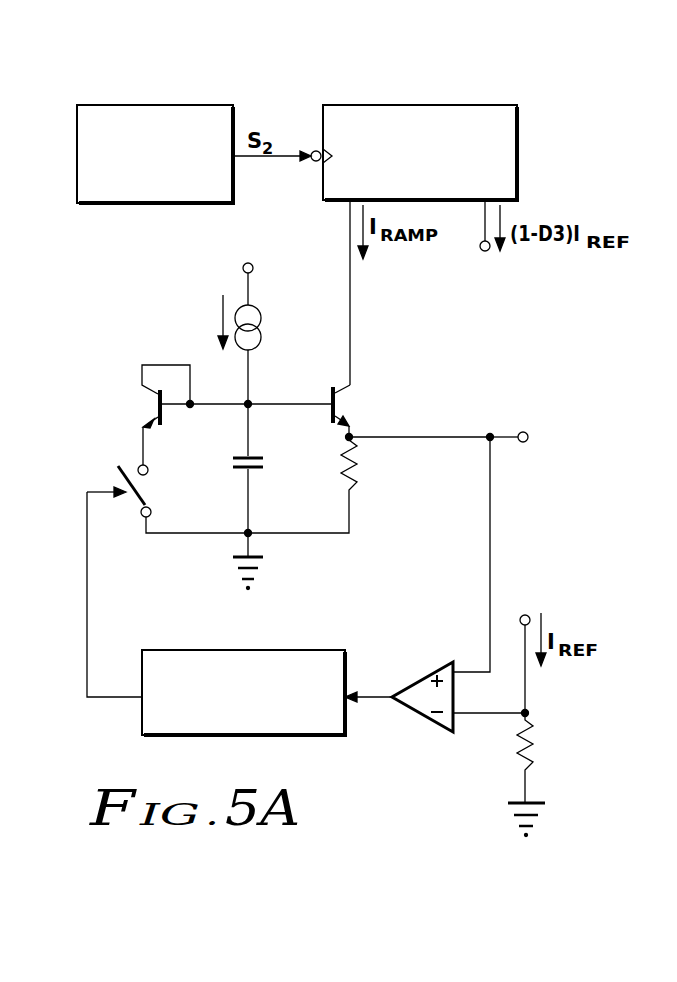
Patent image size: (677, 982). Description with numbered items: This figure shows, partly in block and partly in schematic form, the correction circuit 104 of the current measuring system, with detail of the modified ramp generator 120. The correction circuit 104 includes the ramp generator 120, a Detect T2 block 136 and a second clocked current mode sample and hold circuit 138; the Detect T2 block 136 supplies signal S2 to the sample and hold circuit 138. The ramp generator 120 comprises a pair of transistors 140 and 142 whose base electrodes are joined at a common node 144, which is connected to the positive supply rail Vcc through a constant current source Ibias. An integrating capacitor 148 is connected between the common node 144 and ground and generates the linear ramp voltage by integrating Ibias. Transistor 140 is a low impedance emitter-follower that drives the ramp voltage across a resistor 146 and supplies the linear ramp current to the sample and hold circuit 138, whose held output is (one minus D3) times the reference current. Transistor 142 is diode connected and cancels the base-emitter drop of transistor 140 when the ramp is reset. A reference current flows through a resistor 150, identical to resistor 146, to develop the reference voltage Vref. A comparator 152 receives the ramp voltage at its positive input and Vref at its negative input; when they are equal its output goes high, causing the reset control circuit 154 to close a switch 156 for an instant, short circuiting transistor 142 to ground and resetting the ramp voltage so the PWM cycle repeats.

The correction circuit 104 is at (458, 62).
The modified ramp generator 120 is at (120, 387).
The Detect T2 block 136 is at (197, 105).
The second clocked current mode sample and hold circuit 138 is at (462, 105).
The transistor 140 is at (328, 386).
The diode connected NPN transistor 142 is at (165, 420).
The common node 144 is at (250, 403).
The resistor 146 is at (356, 487).
The integrating capacitor 148 is at (260, 470).
The resistor 150 is at (520, 775).
The comparator 152 is at (402, 707).
The reset control circuit 154 is at (305, 650).
The switch 156 is at (121, 466).